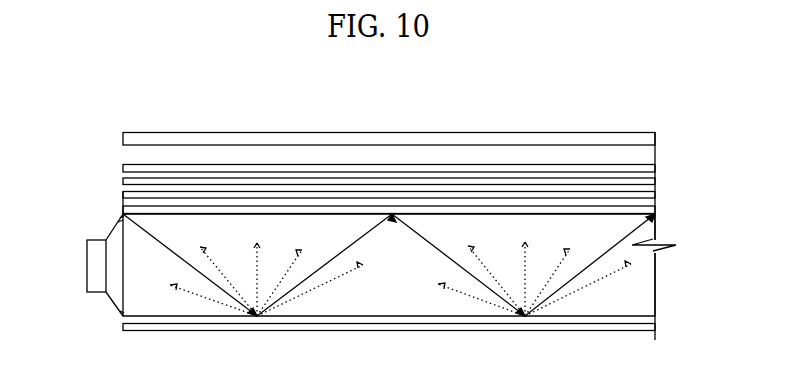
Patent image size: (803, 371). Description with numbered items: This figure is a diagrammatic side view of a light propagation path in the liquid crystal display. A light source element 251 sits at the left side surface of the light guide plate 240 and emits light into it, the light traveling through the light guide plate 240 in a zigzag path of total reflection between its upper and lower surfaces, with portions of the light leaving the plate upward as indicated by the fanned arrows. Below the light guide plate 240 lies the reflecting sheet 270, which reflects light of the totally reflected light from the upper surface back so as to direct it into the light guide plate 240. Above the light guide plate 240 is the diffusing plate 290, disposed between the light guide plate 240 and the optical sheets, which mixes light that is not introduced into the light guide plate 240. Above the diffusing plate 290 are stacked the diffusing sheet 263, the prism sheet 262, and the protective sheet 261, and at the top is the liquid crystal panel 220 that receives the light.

The liquid crystal panel 220 is at (657, 138).
The protective sheet 261 is at (412, 166).
The prism sheet 262 is at (452, 182).
The diffusing sheet 263 is at (490, 195).
The diffusing plate 290 is at (565, 206).
The light guide plate 240 is at (657, 283).
The light source element 251 is at (89, 264).
The reflecting sheet 270 is at (657, 327).